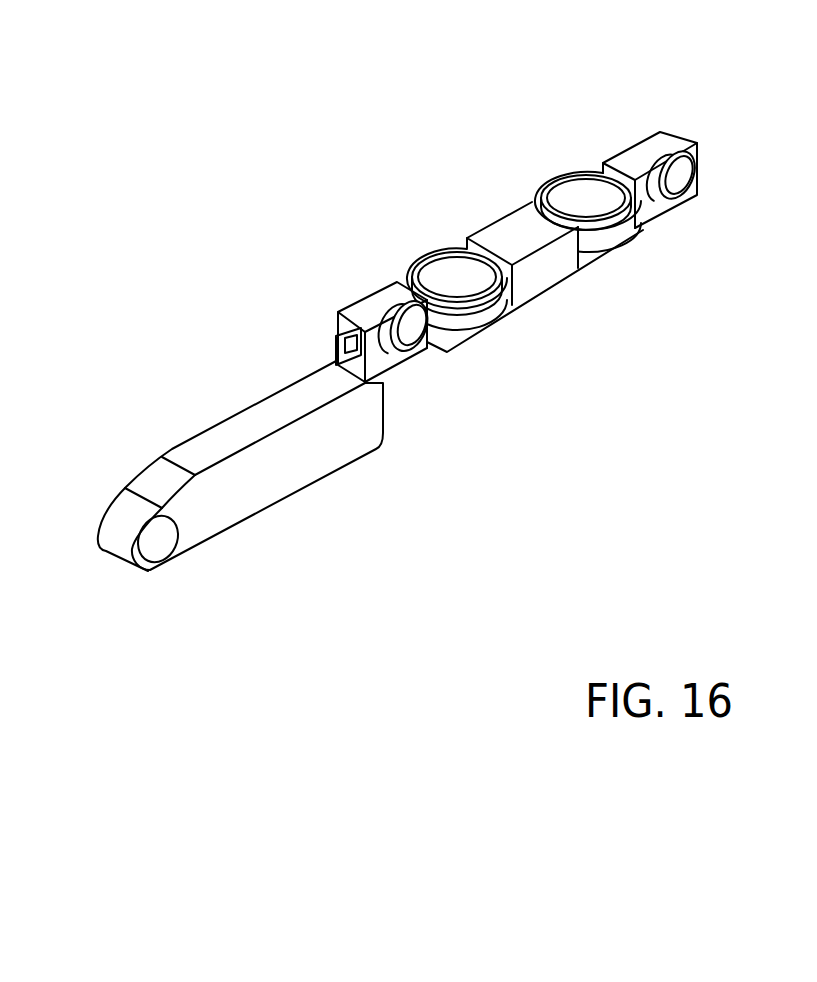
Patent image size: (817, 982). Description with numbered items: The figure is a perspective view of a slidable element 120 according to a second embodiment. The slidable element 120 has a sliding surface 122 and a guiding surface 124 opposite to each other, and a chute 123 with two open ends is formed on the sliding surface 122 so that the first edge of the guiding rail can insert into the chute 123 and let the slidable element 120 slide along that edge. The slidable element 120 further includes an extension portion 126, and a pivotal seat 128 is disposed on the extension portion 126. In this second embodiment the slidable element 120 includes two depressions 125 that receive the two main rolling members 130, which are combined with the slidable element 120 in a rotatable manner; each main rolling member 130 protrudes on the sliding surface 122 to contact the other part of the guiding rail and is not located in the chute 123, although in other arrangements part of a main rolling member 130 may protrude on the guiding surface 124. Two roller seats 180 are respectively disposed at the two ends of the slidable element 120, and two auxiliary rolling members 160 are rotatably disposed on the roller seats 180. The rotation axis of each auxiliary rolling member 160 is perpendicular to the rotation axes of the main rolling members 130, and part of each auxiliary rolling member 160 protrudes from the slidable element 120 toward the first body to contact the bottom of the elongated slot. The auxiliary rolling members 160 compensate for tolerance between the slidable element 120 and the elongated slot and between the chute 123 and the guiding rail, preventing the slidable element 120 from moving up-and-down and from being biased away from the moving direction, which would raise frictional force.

The slidable element 120 is at (345, 147).
The sliding surface 122 is at (488, 205).
The chute 123 is at (337, 340).
The guiding surface 124 is at (556, 285).
The depressions 125 is at (582, 255).
The extension portion 126 is at (253, 422).
The pivotal seat 128 is at (160, 540).
The main rolling members 130 is at (588, 207).
The auxiliary rolling members 160 is at (678, 173).
The roller seats 180 is at (394, 296).